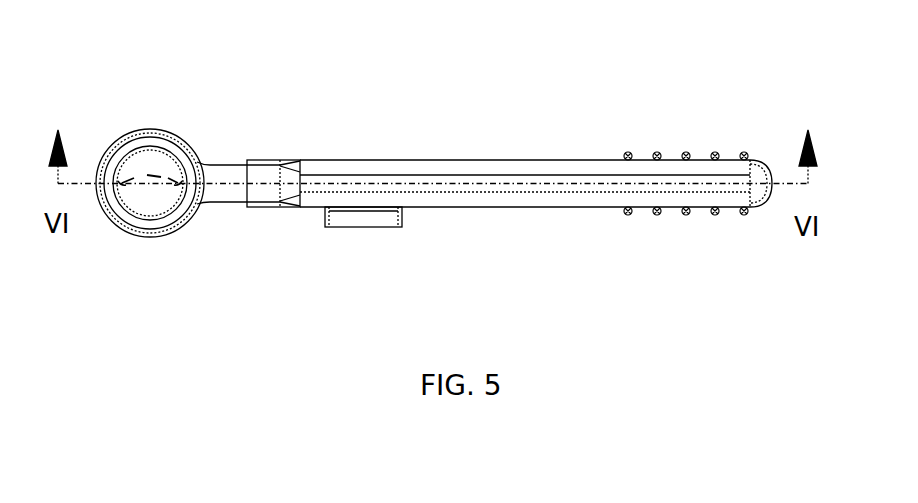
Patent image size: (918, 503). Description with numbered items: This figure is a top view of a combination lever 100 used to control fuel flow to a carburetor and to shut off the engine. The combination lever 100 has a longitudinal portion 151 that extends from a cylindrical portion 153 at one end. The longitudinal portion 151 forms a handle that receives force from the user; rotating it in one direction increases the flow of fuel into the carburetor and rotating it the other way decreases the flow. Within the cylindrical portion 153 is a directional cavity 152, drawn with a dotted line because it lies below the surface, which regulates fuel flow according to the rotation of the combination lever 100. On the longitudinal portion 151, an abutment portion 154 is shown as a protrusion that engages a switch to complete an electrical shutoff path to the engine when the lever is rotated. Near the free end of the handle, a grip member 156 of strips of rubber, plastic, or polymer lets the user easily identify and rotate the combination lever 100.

The combination lever 100 is at (150, 43).
The longitudinal portion 151 is at (507, 205).
The directional cavity 152 is at (158, 162).
The cylindrical portion 153 is at (112, 162).
The abutment portion 154 is at (343, 225).
The grip member 156 is at (628, 153).